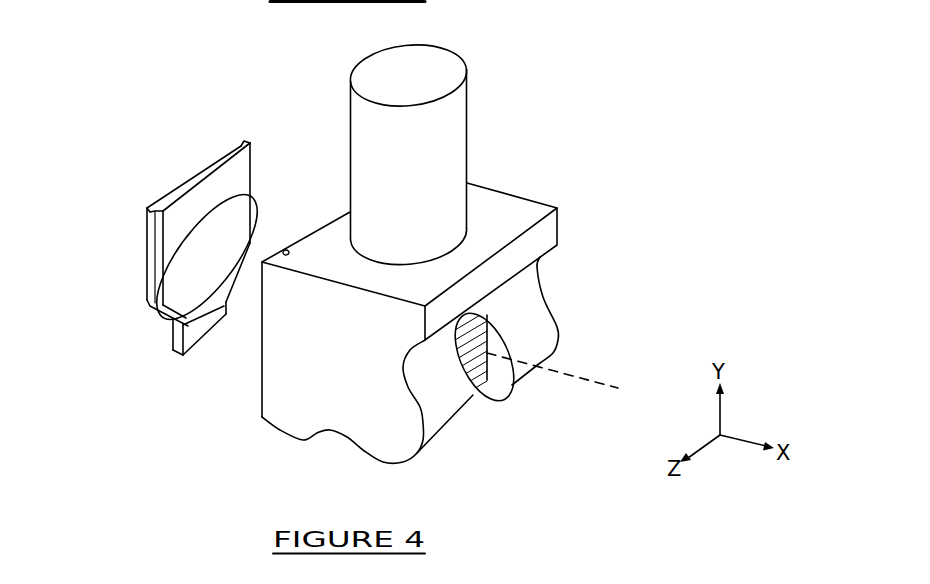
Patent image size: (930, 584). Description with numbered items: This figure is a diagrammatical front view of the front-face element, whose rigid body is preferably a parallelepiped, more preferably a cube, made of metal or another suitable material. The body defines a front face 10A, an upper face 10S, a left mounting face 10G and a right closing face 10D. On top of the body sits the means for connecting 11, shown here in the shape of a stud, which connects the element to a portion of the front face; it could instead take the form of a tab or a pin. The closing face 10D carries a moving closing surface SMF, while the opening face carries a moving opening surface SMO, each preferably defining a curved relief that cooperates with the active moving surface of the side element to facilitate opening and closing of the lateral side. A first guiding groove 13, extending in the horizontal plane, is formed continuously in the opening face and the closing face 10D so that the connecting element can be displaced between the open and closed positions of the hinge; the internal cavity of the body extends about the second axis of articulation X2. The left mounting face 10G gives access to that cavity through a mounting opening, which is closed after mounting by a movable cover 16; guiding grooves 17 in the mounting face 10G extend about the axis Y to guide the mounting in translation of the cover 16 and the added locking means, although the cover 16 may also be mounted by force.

The means for connecting 11 is at (415, 65).
The front face 10A is at (493, 202).
The guiding grooves 17 is at (283, 252).
The upper face 10S is at (350, 372).
The left mounting face 10G is at (240, 391).
The right closing face 10D is at (578, 343).
The first guiding groove 13 is at (477, 330).
The second axis of articulation X2 is at (571, 379).
The moving closing surface SMF is at (448, 408).
The moving opening surface SMO is at (362, 448).
The movable cover 16 is at (148, 270).